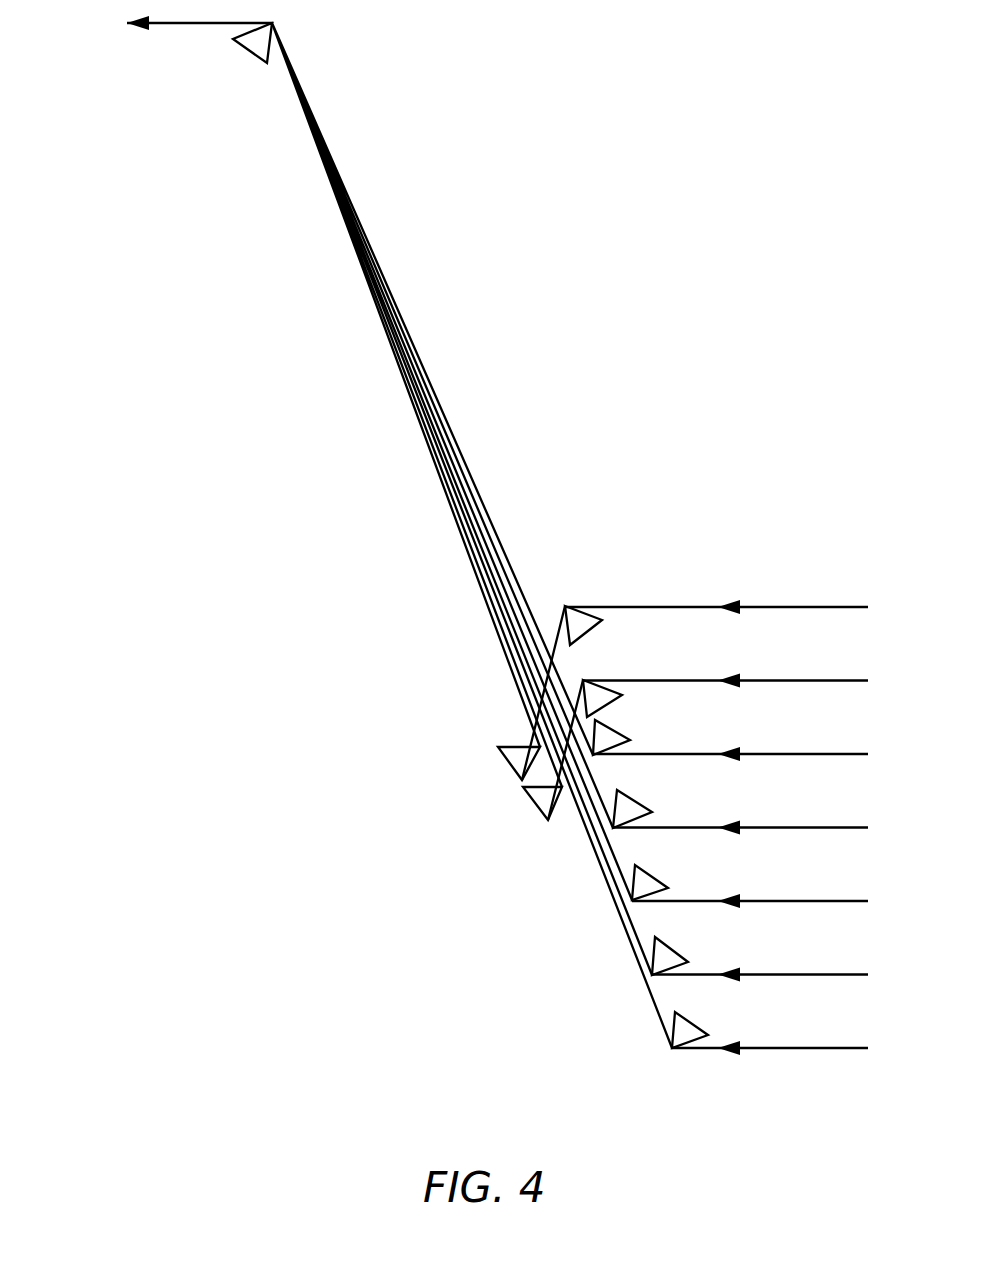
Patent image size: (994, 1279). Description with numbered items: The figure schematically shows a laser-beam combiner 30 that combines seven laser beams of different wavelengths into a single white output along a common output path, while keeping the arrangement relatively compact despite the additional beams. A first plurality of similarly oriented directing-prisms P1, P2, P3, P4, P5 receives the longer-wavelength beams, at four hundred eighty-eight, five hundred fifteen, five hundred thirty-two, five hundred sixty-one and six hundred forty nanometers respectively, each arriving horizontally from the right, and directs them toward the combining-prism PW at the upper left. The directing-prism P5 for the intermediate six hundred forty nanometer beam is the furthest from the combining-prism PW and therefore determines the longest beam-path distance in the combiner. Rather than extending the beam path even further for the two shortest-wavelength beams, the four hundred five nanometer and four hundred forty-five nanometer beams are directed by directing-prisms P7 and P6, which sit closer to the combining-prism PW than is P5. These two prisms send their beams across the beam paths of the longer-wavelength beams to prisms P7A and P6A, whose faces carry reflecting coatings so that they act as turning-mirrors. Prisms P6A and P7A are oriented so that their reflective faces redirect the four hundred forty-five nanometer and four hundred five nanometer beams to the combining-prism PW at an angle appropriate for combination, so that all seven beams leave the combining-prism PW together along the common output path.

The laser-beam combiner 30 is at (497, 527).
The combining-prism PW is at (250, 42).
The directing-prism P1 is at (670, 1043).
The directing-prism P2 is at (658, 945).
The directing-prism P3 is at (640, 875).
The directing-prism P4 is at (620, 800).
The directing-prism P5 is at (603, 730).
The directing-prism P6 is at (603, 695).
The directing-prism P7 is at (577, 610).
The turning-mirror prism P6A is at (502, 823).
The turning-mirror prism P7A is at (517, 747).